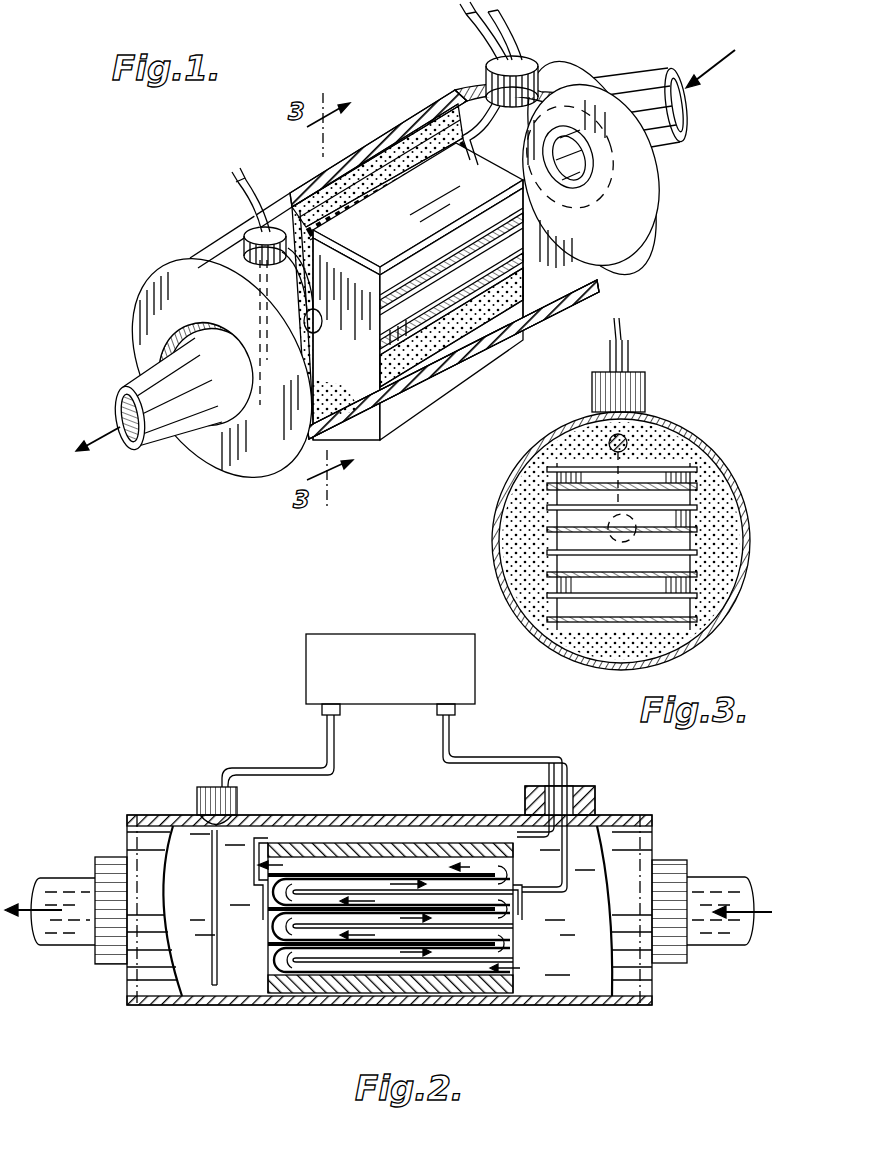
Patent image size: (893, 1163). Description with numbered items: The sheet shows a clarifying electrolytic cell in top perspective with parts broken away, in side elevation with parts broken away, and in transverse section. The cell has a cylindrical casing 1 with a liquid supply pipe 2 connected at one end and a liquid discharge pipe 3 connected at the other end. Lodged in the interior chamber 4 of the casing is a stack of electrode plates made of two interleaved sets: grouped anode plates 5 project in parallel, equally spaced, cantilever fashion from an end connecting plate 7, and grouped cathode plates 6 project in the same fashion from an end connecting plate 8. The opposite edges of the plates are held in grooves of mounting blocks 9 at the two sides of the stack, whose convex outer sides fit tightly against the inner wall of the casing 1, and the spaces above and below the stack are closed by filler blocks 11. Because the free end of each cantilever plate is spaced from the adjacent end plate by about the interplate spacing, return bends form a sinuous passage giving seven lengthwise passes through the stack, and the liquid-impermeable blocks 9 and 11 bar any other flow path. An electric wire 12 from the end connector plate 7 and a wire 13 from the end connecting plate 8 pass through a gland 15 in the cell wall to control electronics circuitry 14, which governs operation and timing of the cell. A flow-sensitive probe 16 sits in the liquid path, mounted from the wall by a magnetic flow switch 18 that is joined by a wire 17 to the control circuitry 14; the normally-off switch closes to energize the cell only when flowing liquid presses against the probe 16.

In FIG. 1, the cylindrical casing 1 is at (655, 204).
In FIG. 3, the cylindrical casing 1 is at (522, 456).
In FIG. 2, the cylindrical casing 1 is at (630, 1000).
In FIG. 1, the liquid supply pipe 2 is at (672, 145).
In FIG. 2, the liquid supply pipe 2 is at (722, 935).
In FIG. 1, the liquid discharge pipe 3 is at (136, 380).
In FIG. 2, the liquid discharge pipe 3 is at (68, 935).
In FIG. 1, the interior chamber 4 is at (585, 289).
In FIG. 2, the interior chamber 4 is at (570, 985).
In FIG. 1, the anode plates 5 is at (400, 235).
In FIG. 2, the anode plates 5 is at (310, 982).
In FIG. 1, the cathode plates 6 is at (355, 276).
In FIG. 2, the cathode plates 6 is at (365, 960).
In FIG. 1, the end connecting plate 7 is at (522, 210).
In FIG. 3, the end connecting plate 7 is at (668, 500).
In FIG. 2, the end connecting plate 7 is at (520, 945).
In FIG. 1, the end connecting plate 8 is at (360, 430).
In FIG. 2, the end connecting plate 8 is at (240, 985).
In FIG. 1, the mounting blocks 9 is at (428, 346).
In FIG. 3, the mounting blocks 9 is at (506, 520).
In FIG. 3, the filler blocks 11 is at (658, 440).
In FIG. 1, the electric wire 12 is at (514, 28).
In FIG. 3, the electric wire 12 is at (625, 337).
In FIG. 2, the electric wire 12 is at (552, 762).
In FIG. 1, the wire 13 is at (480, 32).
In FIG. 3, the wire 13 is at (634, 356).
In FIG. 2, the wire 13 is at (443, 762).
In FIG. 2, the control electronics circuitry 14 is at (476, 686).
In FIG. 1, the gland 15 is at (548, 64).
In FIG. 3, the gland 15 is at (592, 386).
In FIG. 2, the gland 15 is at (597, 795).
In FIG. 1, the flow-sensitive probe 16 is at (216, 470).
In FIG. 2, the flow-sensitive probe 16 is at (212, 890).
In FIG. 1, the wire 17 is at (243, 190).
In FIG. 2, the wire 17 is at (265, 768).
In FIG. 1, the magnetic flow switch 18 is at (236, 240).
In FIG. 2, the magnetic flow switch 18 is at (200, 800).